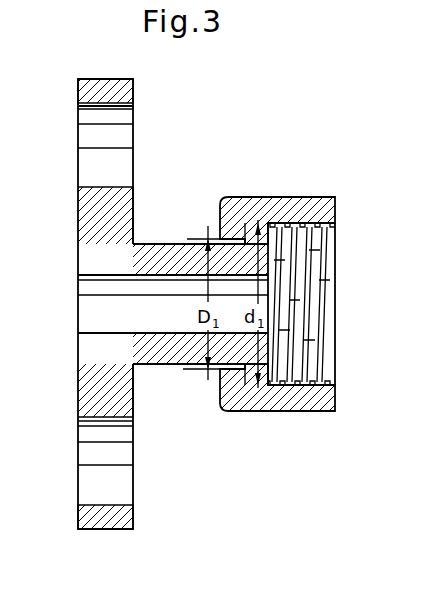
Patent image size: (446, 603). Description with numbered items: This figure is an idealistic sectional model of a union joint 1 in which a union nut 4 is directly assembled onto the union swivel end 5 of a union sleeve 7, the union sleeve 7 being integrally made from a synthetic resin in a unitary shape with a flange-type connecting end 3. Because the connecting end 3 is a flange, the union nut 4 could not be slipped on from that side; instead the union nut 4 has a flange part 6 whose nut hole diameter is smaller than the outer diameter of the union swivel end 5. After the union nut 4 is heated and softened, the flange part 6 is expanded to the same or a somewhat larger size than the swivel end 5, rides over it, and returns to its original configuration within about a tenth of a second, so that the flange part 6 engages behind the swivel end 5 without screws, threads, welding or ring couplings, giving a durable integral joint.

The pipe connector body 1 is at (160, 173).
The connecting end 3 is at (85, 216).
The union nut 4 is at (268, 199).
The union swivel end 5 is at (250, 222).
The flange part 6 is at (228, 222).
The union sleeve 7 is at (164, 345).